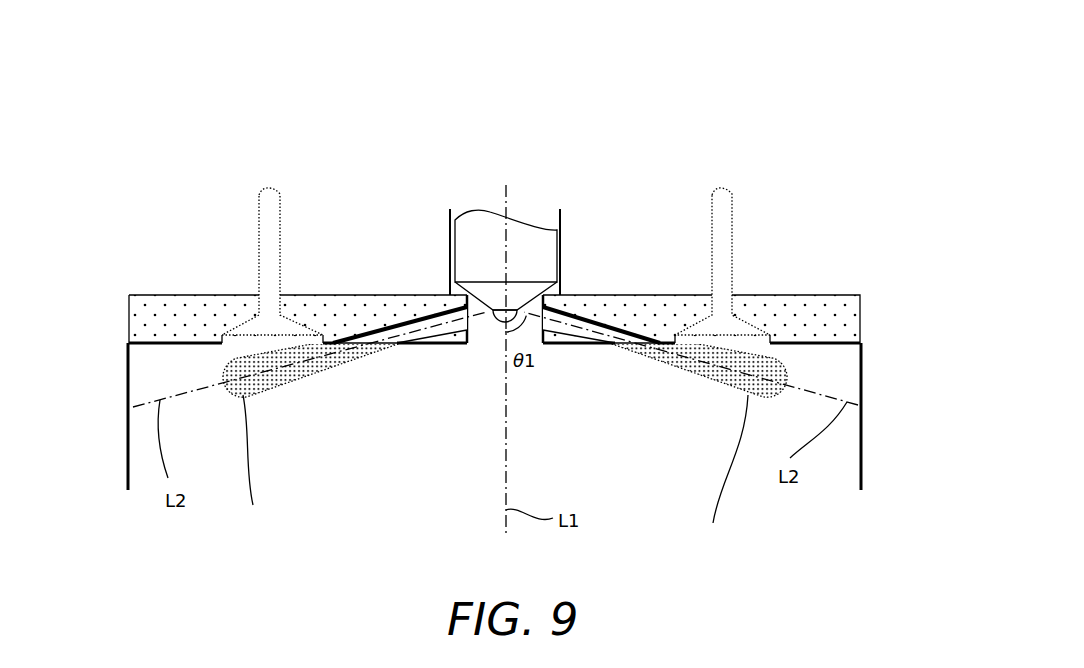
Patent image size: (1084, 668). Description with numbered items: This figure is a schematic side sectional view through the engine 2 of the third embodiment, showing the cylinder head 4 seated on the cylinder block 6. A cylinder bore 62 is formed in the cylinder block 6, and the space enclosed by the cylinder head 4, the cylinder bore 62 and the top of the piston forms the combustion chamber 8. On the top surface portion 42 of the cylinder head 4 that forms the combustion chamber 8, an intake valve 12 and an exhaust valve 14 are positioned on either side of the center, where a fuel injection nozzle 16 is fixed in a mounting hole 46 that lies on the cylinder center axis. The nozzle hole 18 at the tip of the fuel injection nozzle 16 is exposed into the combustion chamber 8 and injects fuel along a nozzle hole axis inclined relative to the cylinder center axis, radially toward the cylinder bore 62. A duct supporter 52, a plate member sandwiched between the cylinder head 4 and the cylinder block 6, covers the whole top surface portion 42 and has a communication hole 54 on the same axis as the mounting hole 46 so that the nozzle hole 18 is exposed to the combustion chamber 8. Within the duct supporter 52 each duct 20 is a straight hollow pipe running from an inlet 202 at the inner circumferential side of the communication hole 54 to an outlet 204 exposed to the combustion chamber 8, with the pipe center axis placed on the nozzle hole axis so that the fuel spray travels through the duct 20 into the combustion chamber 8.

The engine 2 is at (717, 65).
The cylinder head 4 is at (497, 283).
The cylinder block 6 is at (504, 416).
The combustion chamber 8 is at (830, 468).
The intake valve 12 is at (267, 212).
The exhaust valve 14 is at (718, 223).
The fuel injection nozzle 16 is at (530, 303).
The nozzle hole 18 is at (497, 322).
The duct 20 is at (432, 343).
The top surface portion 42 is at (822, 343).
The mounting hole 46 is at (563, 240).
The duct supporter 52 is at (663, 317).
The communication hole 54 is at (473, 345).
The cylinder bore 62 is at (128, 445).
The inlet 202 is at (447, 307).
The outlet 204 is at (377, 343).